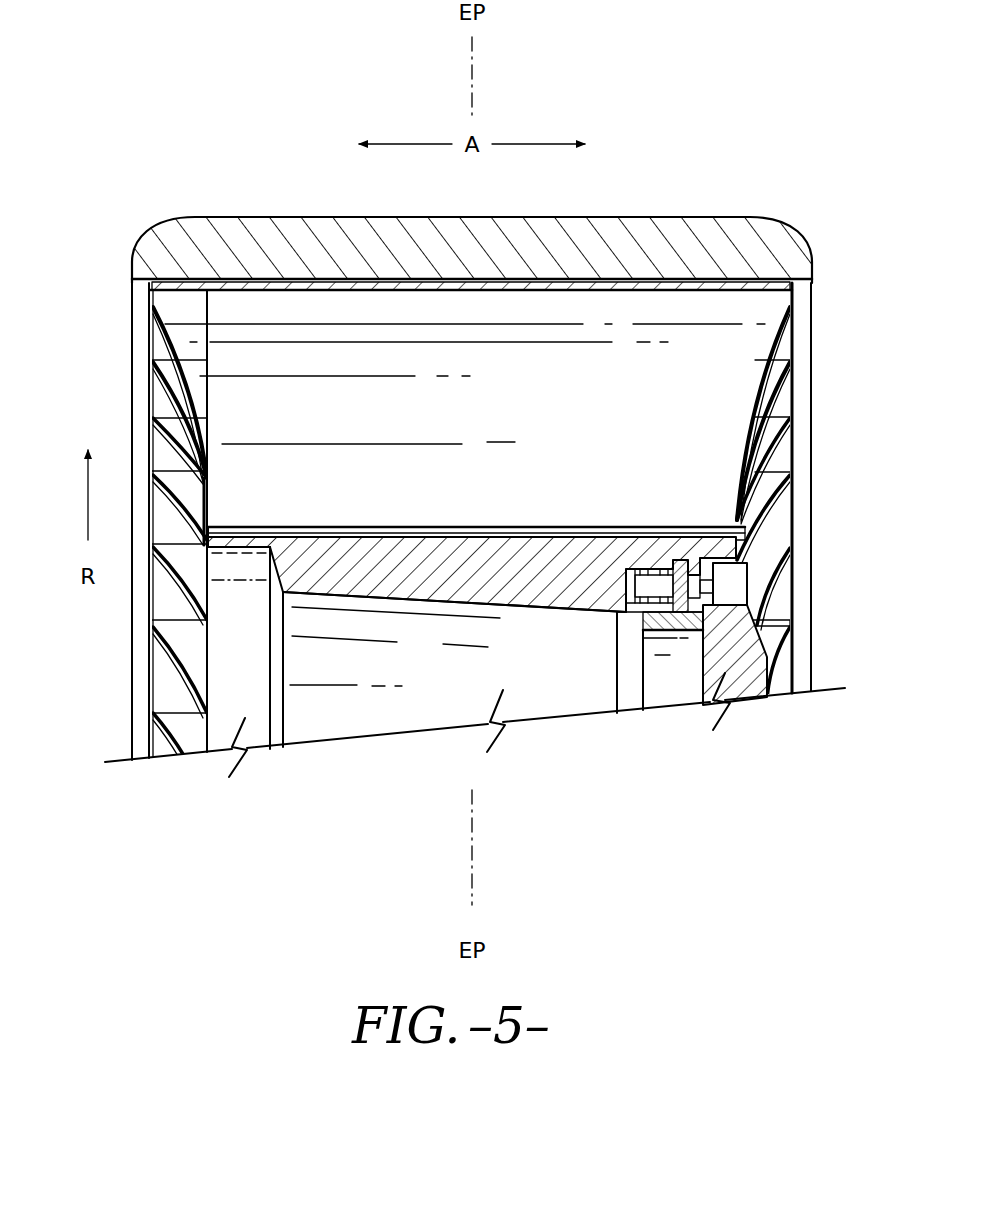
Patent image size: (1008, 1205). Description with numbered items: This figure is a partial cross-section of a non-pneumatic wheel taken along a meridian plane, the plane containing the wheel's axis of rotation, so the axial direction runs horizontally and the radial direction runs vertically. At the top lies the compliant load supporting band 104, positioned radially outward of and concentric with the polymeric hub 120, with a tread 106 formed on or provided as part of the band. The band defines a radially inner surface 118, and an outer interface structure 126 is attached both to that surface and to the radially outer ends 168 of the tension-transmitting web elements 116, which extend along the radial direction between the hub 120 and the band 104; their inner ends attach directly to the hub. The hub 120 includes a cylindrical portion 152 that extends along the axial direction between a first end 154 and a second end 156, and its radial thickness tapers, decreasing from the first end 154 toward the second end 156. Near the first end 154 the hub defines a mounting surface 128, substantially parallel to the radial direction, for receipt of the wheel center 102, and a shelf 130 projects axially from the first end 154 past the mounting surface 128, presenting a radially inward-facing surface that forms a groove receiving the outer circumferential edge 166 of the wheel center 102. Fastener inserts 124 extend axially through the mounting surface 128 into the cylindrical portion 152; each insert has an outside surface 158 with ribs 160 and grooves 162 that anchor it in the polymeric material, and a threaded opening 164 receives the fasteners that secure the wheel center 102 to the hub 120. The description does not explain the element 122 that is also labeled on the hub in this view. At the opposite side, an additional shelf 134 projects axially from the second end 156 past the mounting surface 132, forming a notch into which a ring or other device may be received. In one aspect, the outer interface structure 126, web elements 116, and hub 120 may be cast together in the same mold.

The wheel center 102 is at (740, 677).
The load supporting band 104 is at (160, 246).
The tread 106 is at (622, 213).
The web elements 116 is at (730, 362).
The radially inner surface 118 is at (478, 288).
The hub 120 is at (434, 582).
The mounting surface 122 is at (456, 527).
The fastener insert 124 is at (626, 563).
The outer interface structure 126 is at (693, 286).
The mounting surface 128 is at (703, 556).
The shelf 130 is at (745, 562).
The mounting surface 132 is at (268, 580).
The shelf 134 is at (235, 545).
The cylindrical portion 152 is at (400, 548).
The first end 154 is at (665, 527).
The second end 156 is at (291, 527).
The outside surface 158 is at (630, 557).
The ribs 160 is at (643, 607).
The grooves 162 is at (663, 607).
The threaded opening 164 is at (770, 638).
The outer circumferential edge 166 is at (716, 588).
The radially outer ends 168 is at (140, 295).